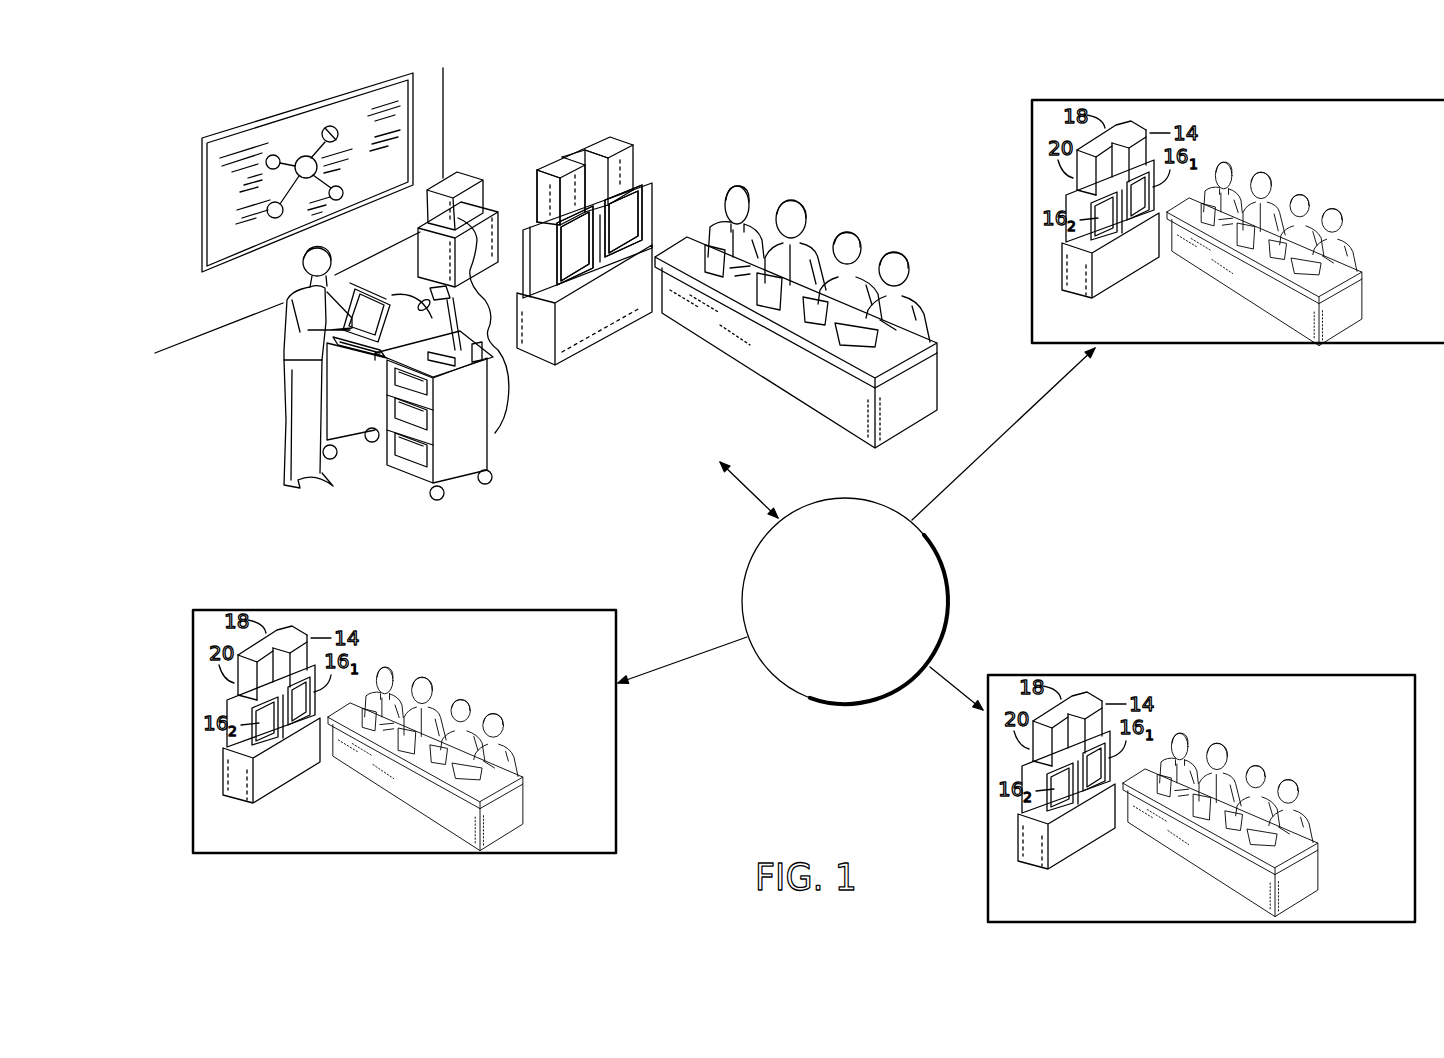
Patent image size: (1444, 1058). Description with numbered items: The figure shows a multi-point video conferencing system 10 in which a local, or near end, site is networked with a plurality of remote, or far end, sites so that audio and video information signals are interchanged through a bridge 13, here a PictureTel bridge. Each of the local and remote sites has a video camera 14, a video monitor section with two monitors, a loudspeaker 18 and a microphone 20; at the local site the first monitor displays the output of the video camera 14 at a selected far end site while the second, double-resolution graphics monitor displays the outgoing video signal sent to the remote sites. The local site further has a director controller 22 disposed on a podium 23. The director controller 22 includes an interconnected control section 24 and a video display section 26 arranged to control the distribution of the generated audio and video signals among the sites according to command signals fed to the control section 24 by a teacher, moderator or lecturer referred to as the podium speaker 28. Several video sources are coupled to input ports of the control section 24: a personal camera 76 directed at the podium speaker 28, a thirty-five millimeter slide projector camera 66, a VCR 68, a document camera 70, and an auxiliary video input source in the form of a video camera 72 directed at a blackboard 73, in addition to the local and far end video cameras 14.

The video conferencing system 10 is at (200, 105).
The blackboard 73 is at (303, 103).
The video camera 72 is at (462, 170).
The video camera 14 is at (618, 135).
The loudspeaker 18 is at (573, 148).
The microphone 20 is at (548, 162).
The director controller 22 is at (382, 310).
The video display section 26 is at (357, 293).
The podium 23 is at (408, 415).
The control section 24 is at (437, 388).
The 35 mm slide projector camera 66 is at (437, 420).
The VCR 68 is at (437, 460).
The document camera 70 is at (443, 307).
The personal camera 76 is at (492, 358).
The podium speaker 28 is at (280, 333).
The bridge 13 is at (860, 611).